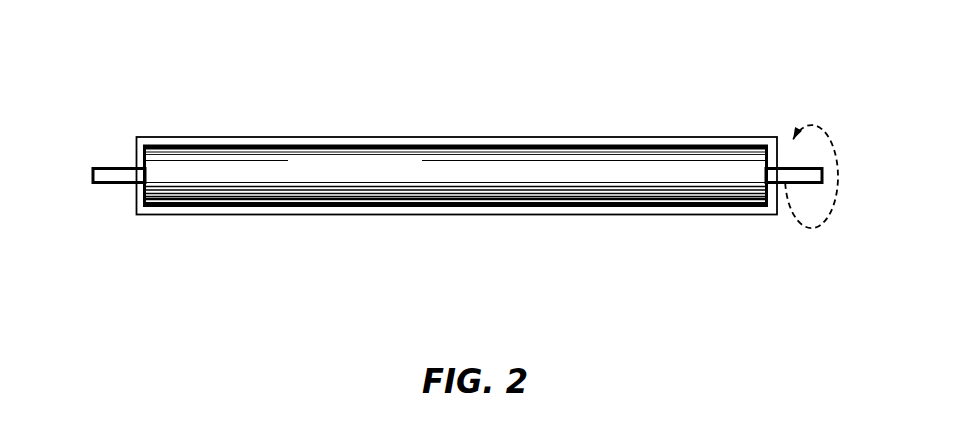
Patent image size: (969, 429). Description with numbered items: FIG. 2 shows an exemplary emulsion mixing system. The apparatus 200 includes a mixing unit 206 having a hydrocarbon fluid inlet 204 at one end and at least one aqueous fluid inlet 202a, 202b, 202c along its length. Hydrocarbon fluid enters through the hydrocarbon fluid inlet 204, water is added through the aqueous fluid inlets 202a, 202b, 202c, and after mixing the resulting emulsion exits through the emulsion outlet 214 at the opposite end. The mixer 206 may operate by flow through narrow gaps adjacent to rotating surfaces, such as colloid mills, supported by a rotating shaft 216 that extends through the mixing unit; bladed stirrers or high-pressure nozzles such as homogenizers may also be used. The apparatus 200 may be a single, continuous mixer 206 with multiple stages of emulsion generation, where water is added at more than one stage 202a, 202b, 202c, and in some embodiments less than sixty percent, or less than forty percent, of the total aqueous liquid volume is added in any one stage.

The apparatus 200 is at (746, 66).
The aqueous fluid inlet 202a is at (162, 127).
The aqueous fluid inlet 202b is at (392, 127).
The aqueous fluid inlet 202c is at (623, 127).
The hydrocarbon fluid inlet 204 is at (126, 152).
The mixing unit 206 is at (453, 160).
The emulsion outlet 214 is at (777, 152).
The rotating shaft 216 is at (117, 184).